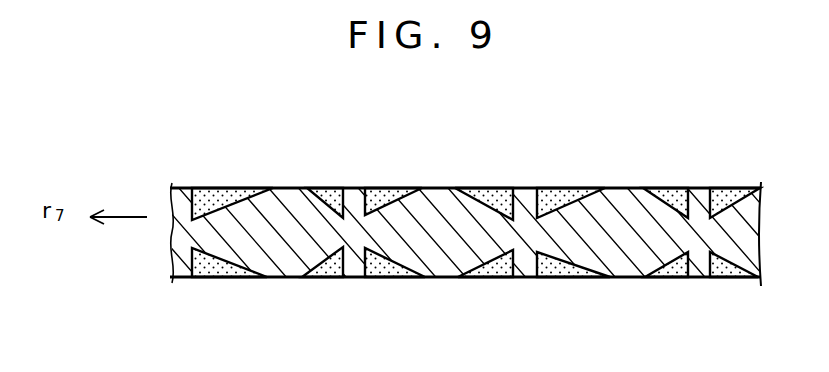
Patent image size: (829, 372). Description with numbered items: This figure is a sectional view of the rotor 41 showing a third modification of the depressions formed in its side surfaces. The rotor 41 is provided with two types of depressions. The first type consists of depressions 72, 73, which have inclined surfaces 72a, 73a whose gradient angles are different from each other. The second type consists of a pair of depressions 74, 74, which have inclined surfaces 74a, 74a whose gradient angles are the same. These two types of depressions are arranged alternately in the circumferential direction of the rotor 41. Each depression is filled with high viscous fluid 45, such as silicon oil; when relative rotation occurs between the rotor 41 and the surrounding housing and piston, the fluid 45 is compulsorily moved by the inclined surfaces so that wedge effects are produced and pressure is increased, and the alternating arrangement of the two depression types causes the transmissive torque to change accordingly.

The rotor 41 is at (633, 245).
The high viscous fluid 45 is at (733, 279).
The depression 72 is at (577, 291).
The inclined surface 72a is at (602, 189).
The depression 73 is at (677, 289).
The inclined surface 73a is at (677, 189).
The depression 74 is at (395, 283).
The inclined surface 74a is at (395, 189).